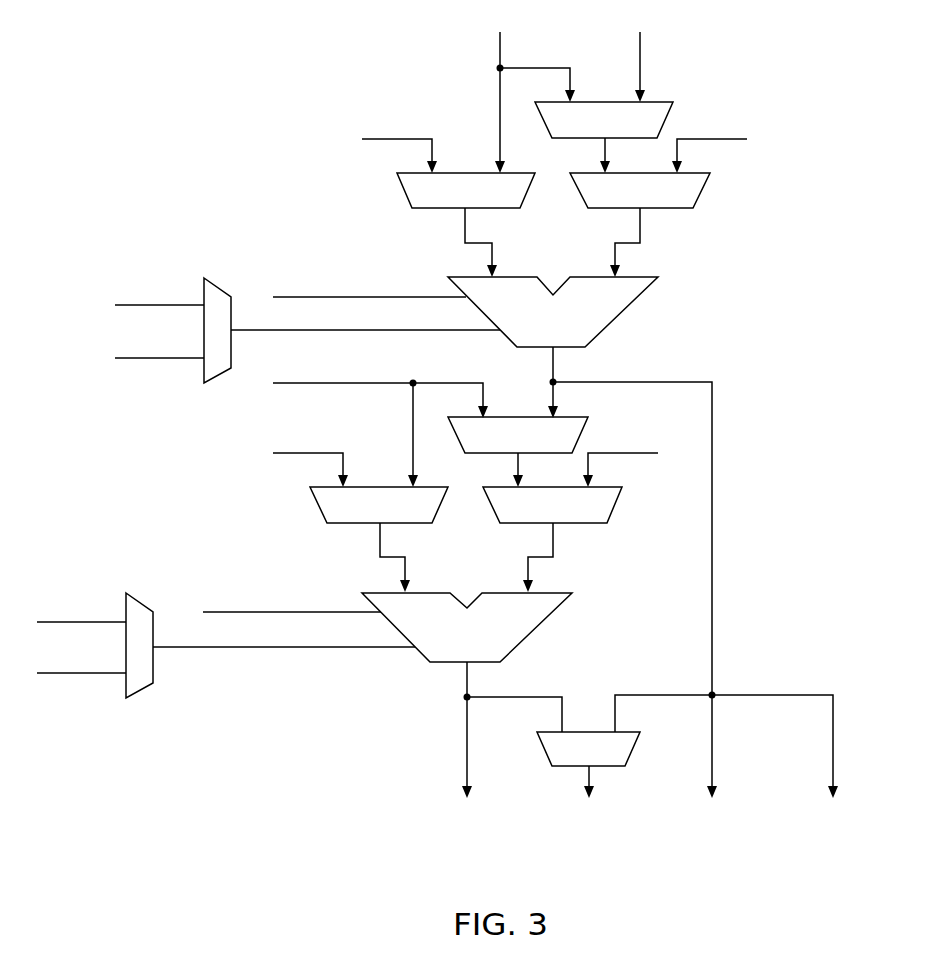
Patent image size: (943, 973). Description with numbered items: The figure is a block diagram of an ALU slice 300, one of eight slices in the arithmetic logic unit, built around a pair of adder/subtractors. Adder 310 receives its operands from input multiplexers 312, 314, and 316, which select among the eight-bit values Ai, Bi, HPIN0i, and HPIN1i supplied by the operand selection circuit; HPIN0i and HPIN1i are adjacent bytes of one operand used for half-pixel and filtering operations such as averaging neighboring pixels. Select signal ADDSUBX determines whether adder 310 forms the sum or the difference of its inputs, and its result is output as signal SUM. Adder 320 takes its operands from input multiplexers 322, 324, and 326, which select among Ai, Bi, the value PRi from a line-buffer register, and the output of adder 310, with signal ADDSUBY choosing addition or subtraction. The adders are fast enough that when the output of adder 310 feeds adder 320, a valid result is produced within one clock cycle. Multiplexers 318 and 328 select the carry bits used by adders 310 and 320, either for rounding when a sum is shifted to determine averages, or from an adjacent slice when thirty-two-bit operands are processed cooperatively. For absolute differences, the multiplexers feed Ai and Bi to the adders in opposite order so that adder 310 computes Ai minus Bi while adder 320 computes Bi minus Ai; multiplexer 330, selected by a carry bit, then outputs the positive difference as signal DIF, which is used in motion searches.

The ALU slice 300 is at (188, 108).
The adder 310 is at (573, 348).
The input multiplexer 312 is at (658, 100).
The input multiplexer 314 is at (677, 210).
The input multiplexer 316 is at (432, 212).
The multiplexer 318 is at (220, 373).
The adder 320 is at (483, 663).
The input multiplexer 322 is at (570, 417).
The input multiplexer 324 is at (588, 525).
The input multiplexer 326 is at (345, 525).
The multiplexer 328 is at (142, 687).
The multiplexer 330 is at (632, 728).